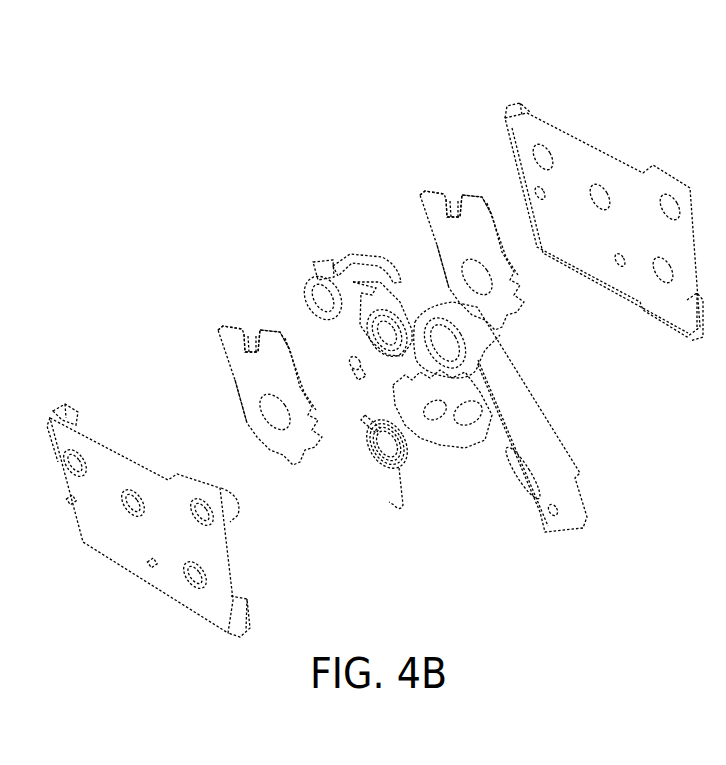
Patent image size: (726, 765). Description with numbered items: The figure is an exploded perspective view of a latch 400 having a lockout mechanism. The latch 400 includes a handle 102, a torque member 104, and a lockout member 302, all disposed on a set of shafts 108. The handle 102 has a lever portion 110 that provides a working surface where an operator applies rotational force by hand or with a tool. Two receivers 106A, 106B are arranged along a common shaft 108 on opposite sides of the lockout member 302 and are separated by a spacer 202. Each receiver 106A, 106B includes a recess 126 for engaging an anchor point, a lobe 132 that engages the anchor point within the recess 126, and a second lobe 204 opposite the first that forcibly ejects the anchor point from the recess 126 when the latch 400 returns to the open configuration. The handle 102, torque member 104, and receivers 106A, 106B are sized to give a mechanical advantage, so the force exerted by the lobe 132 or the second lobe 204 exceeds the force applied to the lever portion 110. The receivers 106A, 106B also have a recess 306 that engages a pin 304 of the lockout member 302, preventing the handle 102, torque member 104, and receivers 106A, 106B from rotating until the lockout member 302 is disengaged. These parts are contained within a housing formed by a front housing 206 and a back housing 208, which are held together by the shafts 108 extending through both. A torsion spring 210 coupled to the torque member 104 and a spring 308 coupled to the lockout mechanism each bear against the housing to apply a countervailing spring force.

The latch 400 is at (407, 100).
The handle 102 is at (500, 417).
The torque member 104 is at (463, 441).
The receiver 106A is at (285, 390).
The receiver 106B is at (488, 256).
The shafts 108 is at (220, 482).
The lever portion 110 is at (543, 406).
The recess 126 is at (251, 324).
The lobe 132 is at (241, 328).
The spacer 202 is at (400, 331).
The second lobe 204 is at (266, 332).
The front housing 206 is at (127, 544).
The back housing 208 is at (583, 231).
The torsion spring 210 is at (397, 512).
The lockout member 302 is at (330, 275).
The pin 304 is at (360, 367).
The recess 306 is at (238, 417).
The spring 308 is at (368, 398).